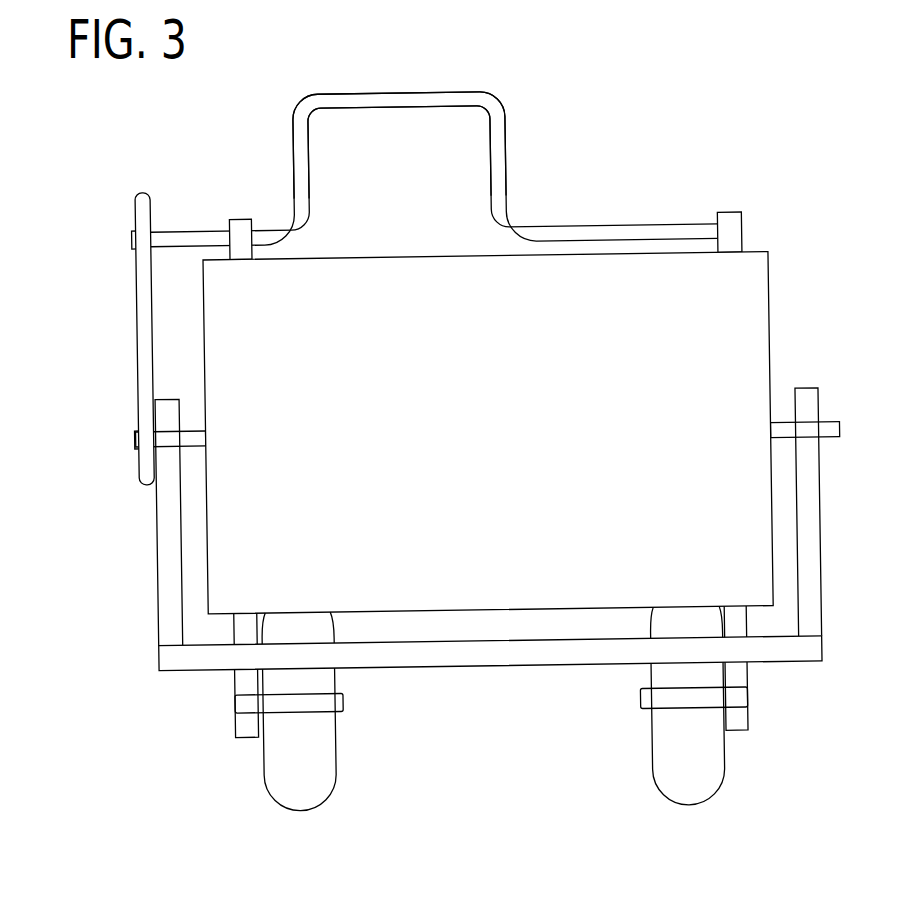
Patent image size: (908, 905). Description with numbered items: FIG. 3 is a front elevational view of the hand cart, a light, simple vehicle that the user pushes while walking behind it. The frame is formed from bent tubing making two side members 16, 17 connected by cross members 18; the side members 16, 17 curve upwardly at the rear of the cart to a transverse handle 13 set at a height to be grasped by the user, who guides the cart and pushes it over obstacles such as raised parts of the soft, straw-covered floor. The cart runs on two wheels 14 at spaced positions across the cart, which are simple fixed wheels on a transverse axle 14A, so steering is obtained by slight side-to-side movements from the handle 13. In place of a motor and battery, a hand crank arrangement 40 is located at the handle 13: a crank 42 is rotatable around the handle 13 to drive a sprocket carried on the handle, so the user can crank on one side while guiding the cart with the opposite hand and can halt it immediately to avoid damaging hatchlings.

The transverse handle 13 is at (658, 223).
The wheels 14 is at (712, 763).
The transverse axle 14A is at (658, 702).
The side member 16 is at (160, 533).
The side member 17 is at (812, 493).
The cross members 18 is at (442, 655).
The hand crank arrangement 40 is at (543, 155).
The crank 42 is at (462, 95).